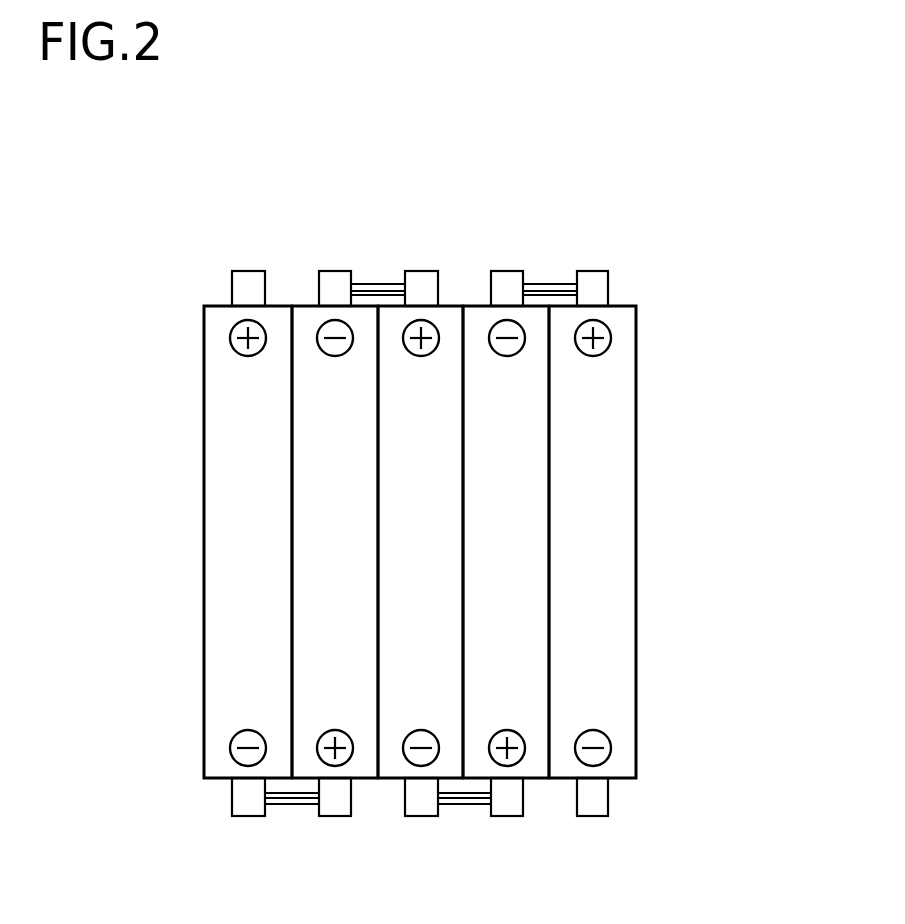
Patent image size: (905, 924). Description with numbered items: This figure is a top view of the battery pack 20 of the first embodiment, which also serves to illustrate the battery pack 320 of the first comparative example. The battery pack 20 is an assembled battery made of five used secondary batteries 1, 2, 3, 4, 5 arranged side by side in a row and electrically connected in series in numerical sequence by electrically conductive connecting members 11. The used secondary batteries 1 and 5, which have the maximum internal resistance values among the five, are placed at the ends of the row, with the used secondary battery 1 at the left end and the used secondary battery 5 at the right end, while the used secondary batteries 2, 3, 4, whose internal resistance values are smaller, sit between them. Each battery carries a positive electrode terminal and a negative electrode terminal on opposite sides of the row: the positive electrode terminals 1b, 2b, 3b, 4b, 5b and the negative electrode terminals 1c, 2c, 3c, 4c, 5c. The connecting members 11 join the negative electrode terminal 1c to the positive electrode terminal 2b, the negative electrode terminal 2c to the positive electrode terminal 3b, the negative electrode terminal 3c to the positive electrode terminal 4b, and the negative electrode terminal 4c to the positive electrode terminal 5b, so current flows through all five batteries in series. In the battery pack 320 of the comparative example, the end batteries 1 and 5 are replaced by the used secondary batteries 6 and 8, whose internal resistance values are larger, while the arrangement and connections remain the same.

The battery pack 20 is at (500, 467).
The battery pack 320 is at (420, 542).
The used secondary battery 1 is at (248, 542).
The used secondary battery 6 is at (272, 557).
The used secondary battery 2 is at (343, 557).
The used secondary battery 3 is at (428, 557).
The used secondary battery 4 is at (513, 557).
The used secondary battery 5 is at (592, 542).
The used secondary battery 8 is at (617, 557).
The connecting member 11 is at (546, 282).
The positive electrode terminal 1b is at (255, 279).
The negative electrode terminal 1c is at (253, 817).
The positive electrode terminal 2b is at (333, 817).
The negative electrode terminal 2c is at (334, 279).
The positive electrode terminal 3b is at (421, 279).
The negative electrode terminal 3c is at (420, 817).
The positive electrode terminal 4b is at (505, 817).
The negative electrode terminal 4c is at (506, 279).
The positive electrode terminal 5b is at (596, 279).
The negative electrode terminal 5c is at (592, 817).